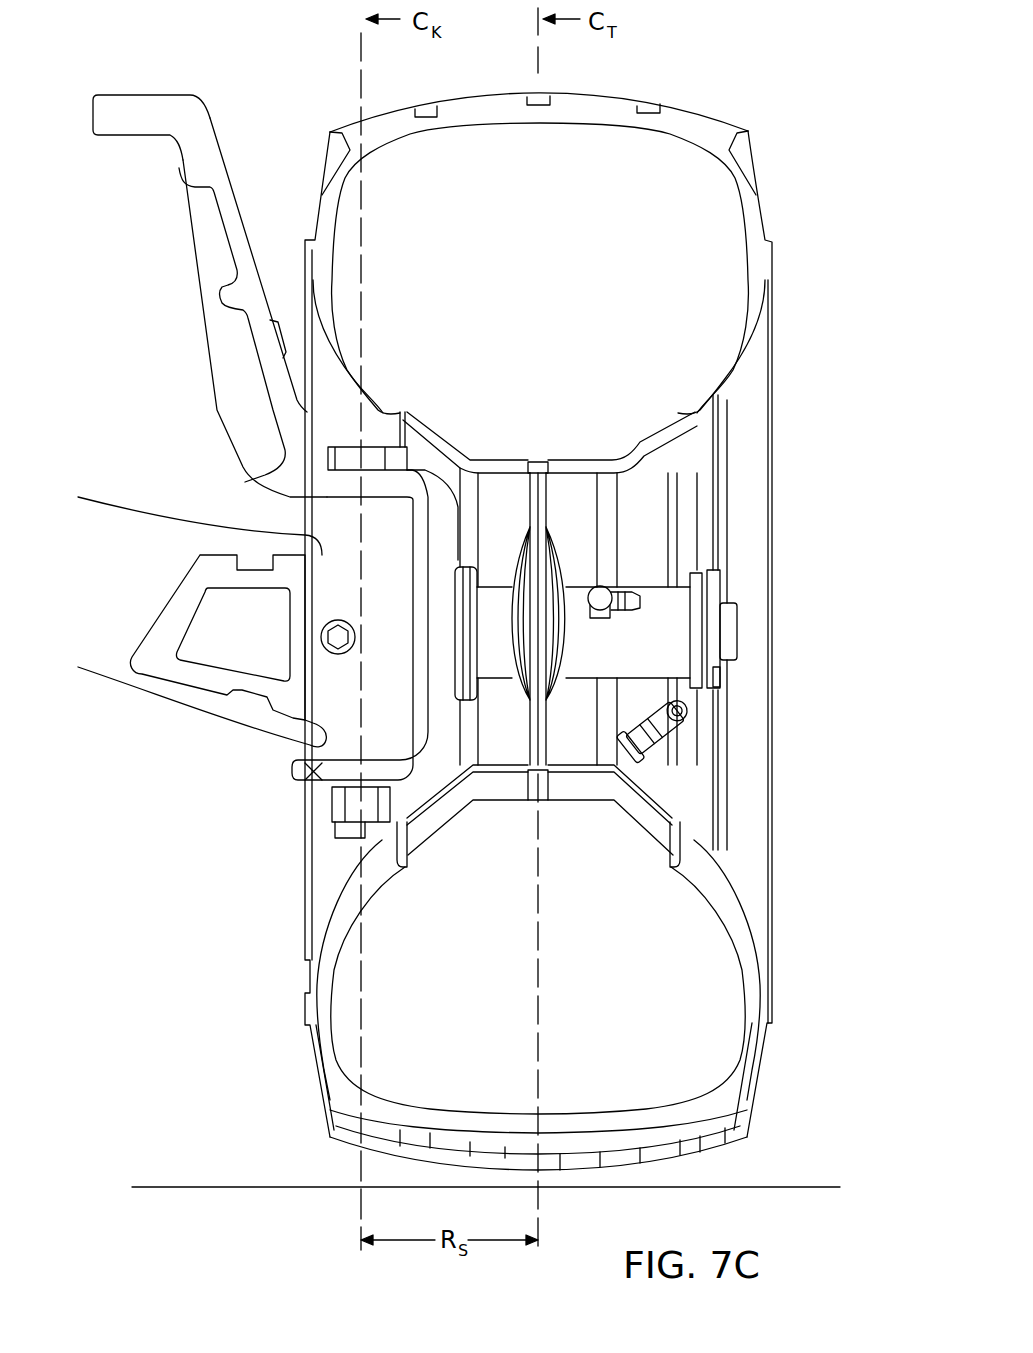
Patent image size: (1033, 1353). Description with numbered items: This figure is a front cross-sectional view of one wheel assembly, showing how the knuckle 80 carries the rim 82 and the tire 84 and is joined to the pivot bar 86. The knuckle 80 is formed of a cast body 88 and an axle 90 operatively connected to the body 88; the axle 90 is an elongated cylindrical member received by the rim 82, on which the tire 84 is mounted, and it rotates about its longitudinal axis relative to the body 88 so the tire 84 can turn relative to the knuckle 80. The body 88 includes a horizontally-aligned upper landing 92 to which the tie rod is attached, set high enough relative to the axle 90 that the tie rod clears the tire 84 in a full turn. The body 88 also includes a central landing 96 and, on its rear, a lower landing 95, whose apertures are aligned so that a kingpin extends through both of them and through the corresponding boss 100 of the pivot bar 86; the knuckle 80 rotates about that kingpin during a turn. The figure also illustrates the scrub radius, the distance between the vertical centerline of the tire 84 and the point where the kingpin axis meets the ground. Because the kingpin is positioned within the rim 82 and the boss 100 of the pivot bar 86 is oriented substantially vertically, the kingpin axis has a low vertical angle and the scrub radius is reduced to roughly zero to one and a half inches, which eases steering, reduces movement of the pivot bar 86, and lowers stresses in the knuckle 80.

The knuckle 80 is at (203, 365).
The rim 82 is at (640, 438).
The tire 84 is at (737, 347).
The pivot bar 86 is at (107, 655).
The body 88 is at (203, 307).
The axle 90 is at (725, 644).
The upper landing 92 is at (128, 92).
The lower landing 95 is at (327, 772).
The central landing 96 is at (343, 482).
The boss 100 is at (337, 707).